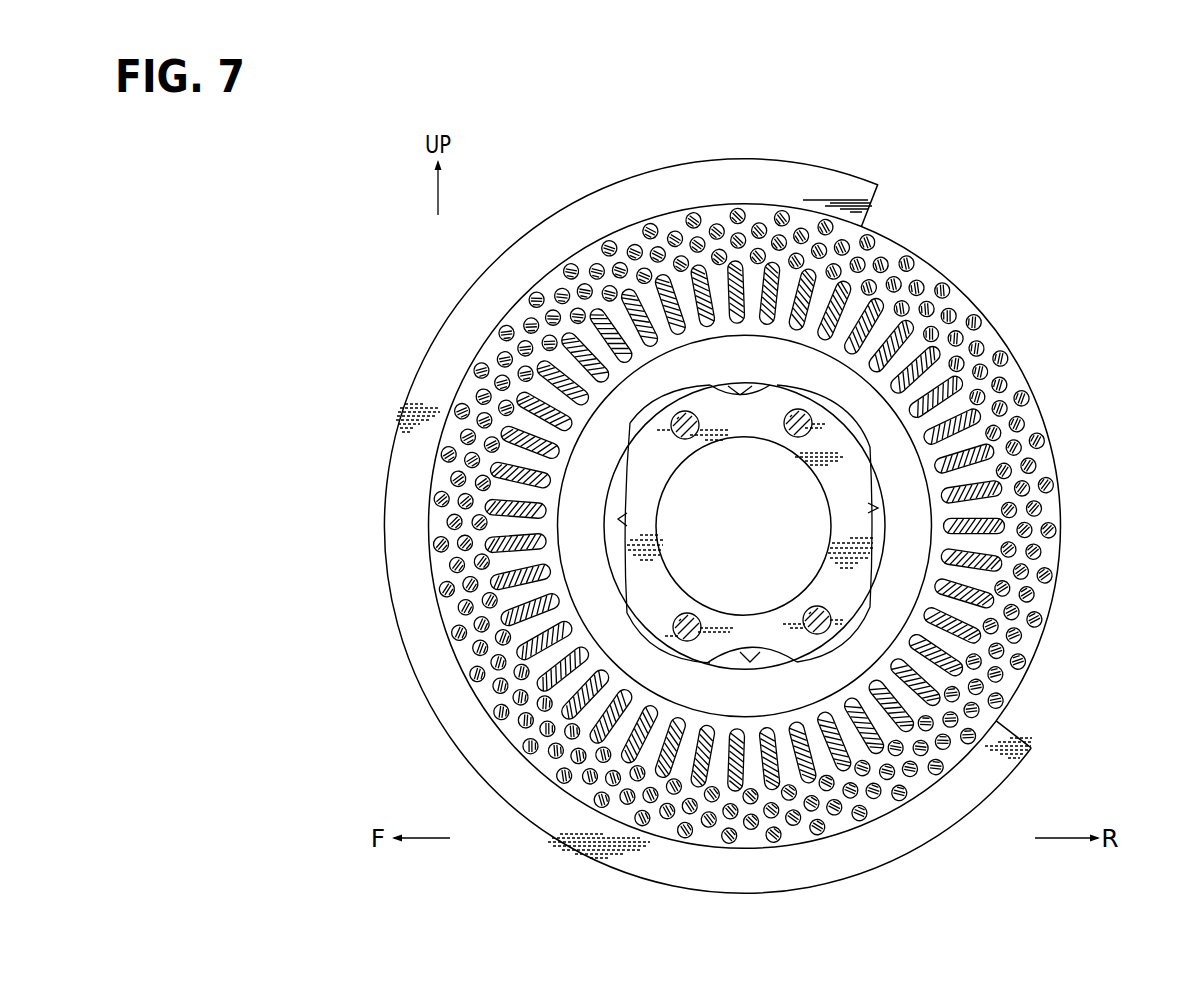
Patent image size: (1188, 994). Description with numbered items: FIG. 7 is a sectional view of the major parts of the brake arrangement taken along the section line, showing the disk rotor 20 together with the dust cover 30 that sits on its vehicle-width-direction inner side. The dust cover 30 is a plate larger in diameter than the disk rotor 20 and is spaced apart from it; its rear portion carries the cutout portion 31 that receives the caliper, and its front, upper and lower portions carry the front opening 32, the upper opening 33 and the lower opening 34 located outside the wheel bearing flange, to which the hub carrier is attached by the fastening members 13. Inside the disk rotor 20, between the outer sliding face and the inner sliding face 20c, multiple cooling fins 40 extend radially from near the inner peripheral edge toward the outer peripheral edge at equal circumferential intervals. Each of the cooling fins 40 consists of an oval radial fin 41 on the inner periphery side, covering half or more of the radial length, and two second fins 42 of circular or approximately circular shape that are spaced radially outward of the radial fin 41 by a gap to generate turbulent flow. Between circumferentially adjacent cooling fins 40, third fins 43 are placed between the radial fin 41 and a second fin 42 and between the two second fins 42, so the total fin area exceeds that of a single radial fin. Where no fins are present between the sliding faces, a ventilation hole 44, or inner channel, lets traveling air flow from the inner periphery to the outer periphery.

The fastening members 13 is at (676, 415).
The disk rotor 20 is at (683, 526).
The inner sliding face 20c is at (466, 373).
The dust cover 30 is at (567, 207).
The cutout portion 31 is at (873, 509).
The front opening 32 is at (630, 523).
The upper opening 33 is at (739, 394).
The lower opening 34 is at (747, 656).
The cooling fins 40 is at (756, 503).
The radial fin 41 is at (594, 381).
The second fins 42 is at (545, 315).
The third fins 43 is at (523, 324).
The ventilation hole 44 is at (727, 325).